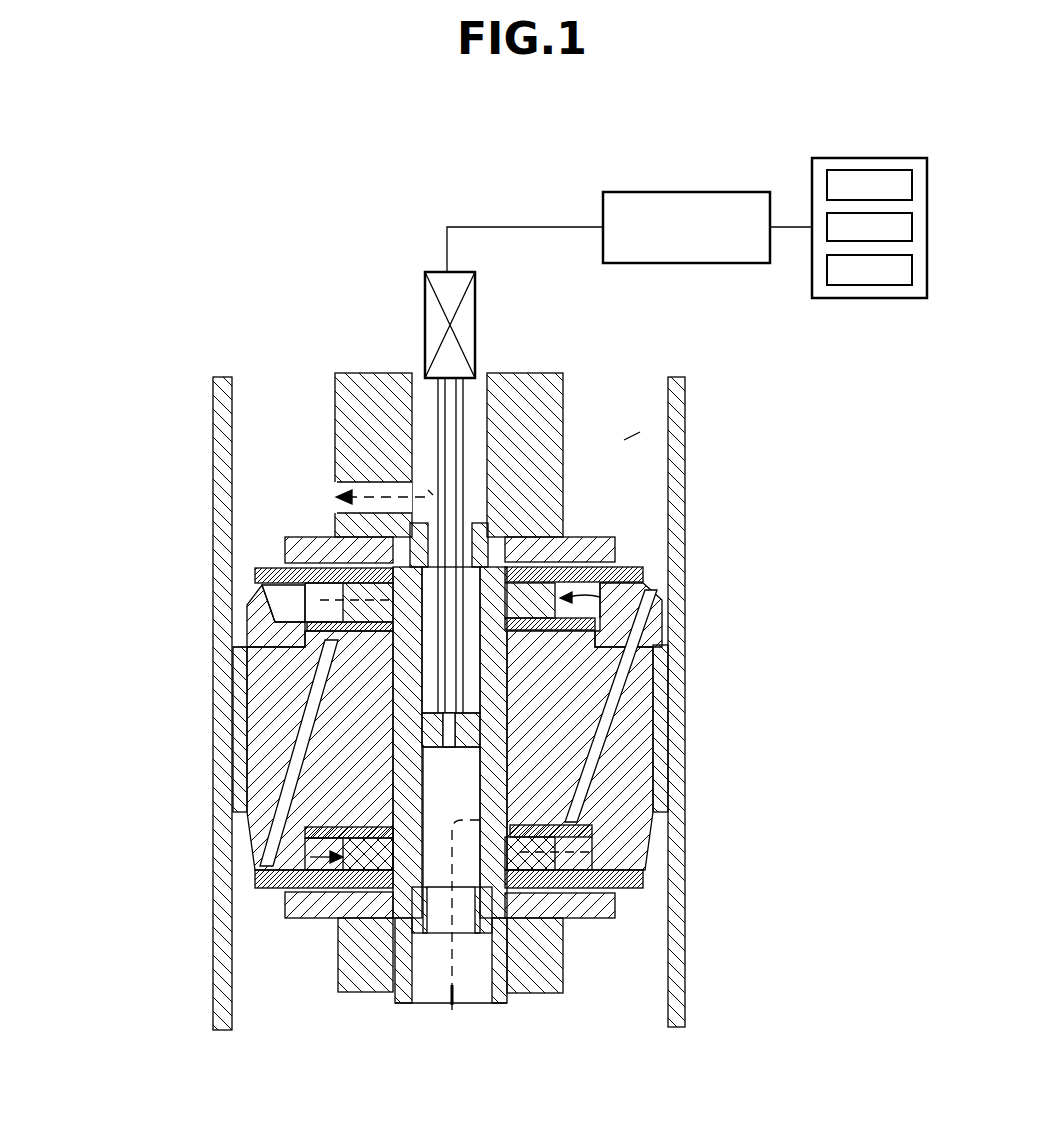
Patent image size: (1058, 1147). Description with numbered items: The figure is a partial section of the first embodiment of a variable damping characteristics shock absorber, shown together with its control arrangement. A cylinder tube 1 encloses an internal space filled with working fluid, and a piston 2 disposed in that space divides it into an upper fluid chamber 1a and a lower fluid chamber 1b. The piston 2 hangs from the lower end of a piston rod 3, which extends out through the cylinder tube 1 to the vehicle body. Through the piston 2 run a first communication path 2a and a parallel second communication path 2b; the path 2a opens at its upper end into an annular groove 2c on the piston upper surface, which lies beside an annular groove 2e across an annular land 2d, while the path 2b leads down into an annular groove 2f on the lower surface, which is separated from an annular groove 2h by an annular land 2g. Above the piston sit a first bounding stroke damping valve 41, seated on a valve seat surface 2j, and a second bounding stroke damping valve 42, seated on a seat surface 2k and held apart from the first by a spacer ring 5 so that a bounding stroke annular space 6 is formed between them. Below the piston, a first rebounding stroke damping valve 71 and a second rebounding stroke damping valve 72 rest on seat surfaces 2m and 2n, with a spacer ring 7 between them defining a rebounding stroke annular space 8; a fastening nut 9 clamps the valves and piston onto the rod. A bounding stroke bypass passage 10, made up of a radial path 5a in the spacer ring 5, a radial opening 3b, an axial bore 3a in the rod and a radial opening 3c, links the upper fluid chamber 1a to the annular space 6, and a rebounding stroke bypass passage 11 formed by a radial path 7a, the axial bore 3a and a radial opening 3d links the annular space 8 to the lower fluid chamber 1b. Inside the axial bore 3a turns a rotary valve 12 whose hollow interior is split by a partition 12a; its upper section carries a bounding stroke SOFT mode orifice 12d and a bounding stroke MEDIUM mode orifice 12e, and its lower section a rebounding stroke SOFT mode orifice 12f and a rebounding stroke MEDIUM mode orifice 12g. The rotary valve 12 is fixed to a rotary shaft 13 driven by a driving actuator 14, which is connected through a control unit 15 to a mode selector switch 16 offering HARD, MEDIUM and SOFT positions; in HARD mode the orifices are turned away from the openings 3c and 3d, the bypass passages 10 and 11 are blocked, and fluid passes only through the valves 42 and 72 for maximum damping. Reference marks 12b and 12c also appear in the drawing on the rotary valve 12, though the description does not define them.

The cylinder tube 1 is at (688, 458).
The upper fluid chamber 1a is at (624, 440).
The lower fluid chamber 1b is at (290, 995).
The piston 2 is at (222, 818).
The first communication path 2a is at (300, 726).
The second communication path 2b is at (600, 735).
The annular groove 2c is at (335, 640).
The annular land 2d is at (238, 641).
The annular groove 2e is at (325, 636).
The annular groove 2f is at (650, 762).
The annular land 2g is at (620, 792).
The annular groove 2h is at (597, 812).
The valve seat surface 2j is at (300, 598).
The seat surface 2k is at (320, 575).
The seat surface 2m is at (577, 850).
The seat surface 2n is at (640, 880).
The piston rod 3 is at (567, 398).
The axial bore 3a is at (412, 405).
The radial opening 3b is at (400, 517).
The radial opening 3c is at (367, 493).
The radial opening 3d is at (510, 932).
The spacer ring 5 is at (585, 592).
The radial path 5a is at (305, 597).
The bounding stroke annular space 6 is at (330, 562).
The spacer ring 7 is at (298, 882).
The radial path 7a is at (565, 918).
The rebounding stroke annular space 8 is at (612, 918).
The fastening nut 9 is at (348, 995).
The bounding stroke bypass passage 10 is at (428, 490).
The rebounding stroke bypass passage 11 is at (452, 1010).
The rotary valve 12 is at (512, 698).
The partition 12a is at (430, 748).
The upper cylinder chamber 12b is at (515, 665).
The piston 12c is at (490, 790).
The bounding stroke SOFT mode orifice 12d is at (478, 545).
The bounding stroke MEDIUM mode orifice 12e is at (535, 550).
The rebounding stroke SOFT mode orifice 12f is at (452, 860).
The rebounding stroke MEDIUM mode orifice 12g is at (390, 935).
The rotary shaft 13 is at (463, 400).
The driving actuator 14 is at (475, 312).
The control unit 15 is at (688, 192).
The mode selector switch 16 is at (880, 298).
The first bounding stroke damping valve 41 is at (592, 622).
The second bounding stroke damping valve 42 is at (635, 570).
The first rebounding stroke damping valve 71 is at (268, 850).
The second rebounding stroke damping valve 72 is at (292, 870).